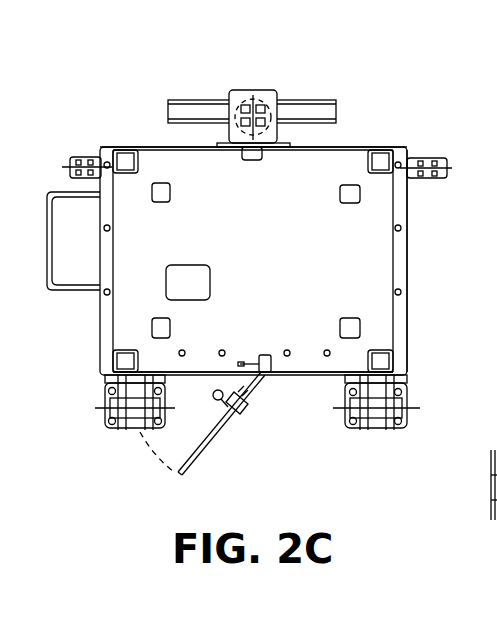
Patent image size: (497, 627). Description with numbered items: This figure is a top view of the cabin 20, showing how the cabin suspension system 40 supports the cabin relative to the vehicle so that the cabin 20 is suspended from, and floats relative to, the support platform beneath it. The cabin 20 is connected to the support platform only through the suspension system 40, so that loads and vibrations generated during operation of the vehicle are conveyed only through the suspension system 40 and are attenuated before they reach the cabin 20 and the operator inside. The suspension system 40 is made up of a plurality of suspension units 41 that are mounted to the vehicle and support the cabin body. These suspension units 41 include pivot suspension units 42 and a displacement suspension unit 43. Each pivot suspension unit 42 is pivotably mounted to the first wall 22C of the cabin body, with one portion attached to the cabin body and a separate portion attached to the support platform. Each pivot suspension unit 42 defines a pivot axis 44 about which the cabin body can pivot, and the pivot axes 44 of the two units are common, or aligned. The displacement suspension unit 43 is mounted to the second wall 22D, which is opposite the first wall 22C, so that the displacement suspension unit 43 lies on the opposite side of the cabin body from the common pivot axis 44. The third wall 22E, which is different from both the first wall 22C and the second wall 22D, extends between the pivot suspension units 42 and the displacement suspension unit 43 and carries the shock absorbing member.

The cabin 20 is at (98, 342).
The first wall 22C is at (295, 375).
The second wall 22D is at (352, 147).
The third wall 22E is at (407, 322).
The cabin suspension system 40 is at (375, 445).
The suspension units 41 is at (203, 258).
The pivot suspension units 42 is at (117, 432).
The displacement suspension unit 43 is at (230, 70).
The pivot axis 44 is at (496, 196).